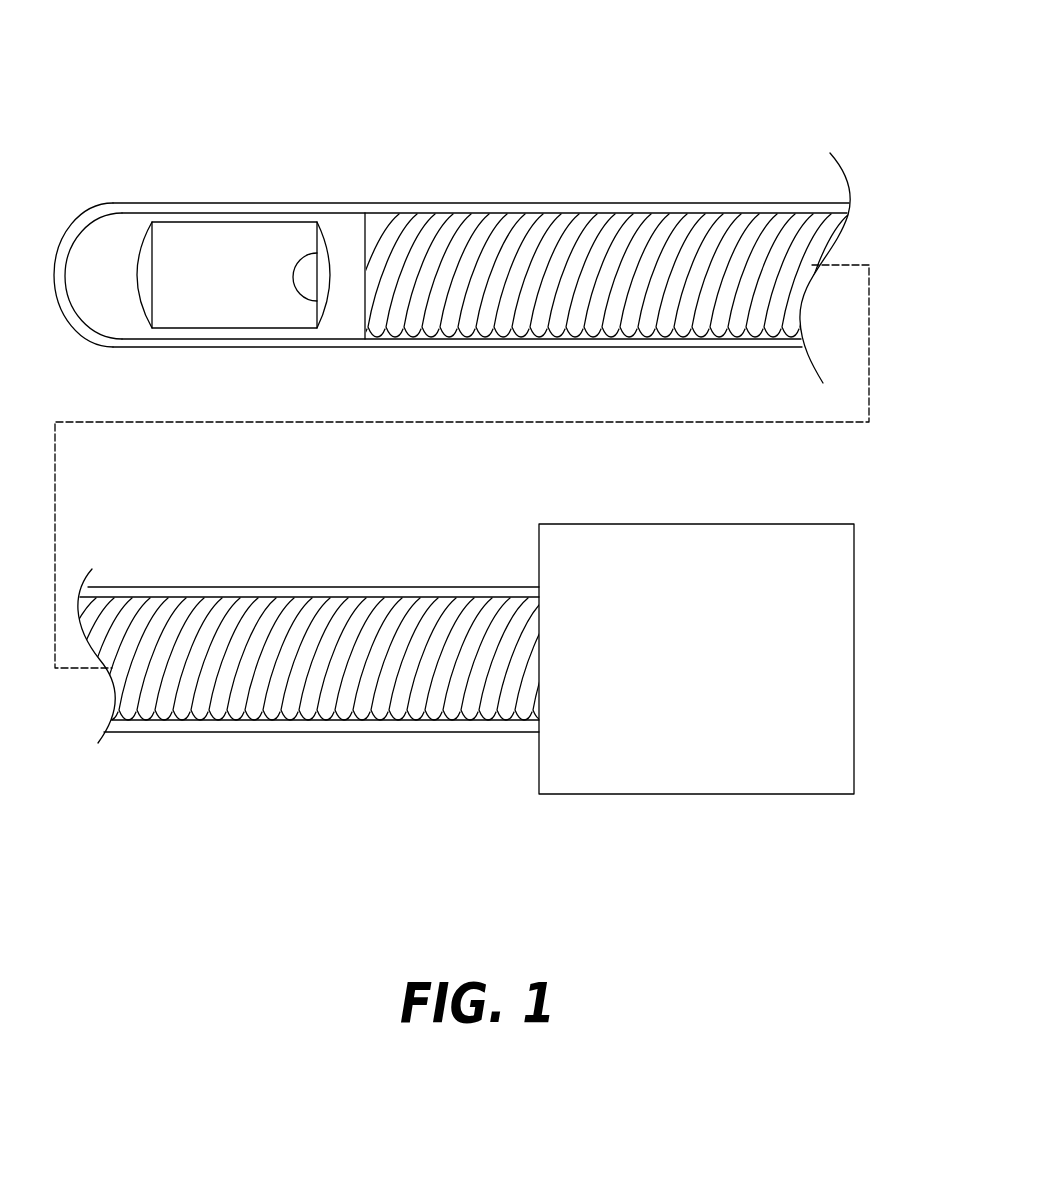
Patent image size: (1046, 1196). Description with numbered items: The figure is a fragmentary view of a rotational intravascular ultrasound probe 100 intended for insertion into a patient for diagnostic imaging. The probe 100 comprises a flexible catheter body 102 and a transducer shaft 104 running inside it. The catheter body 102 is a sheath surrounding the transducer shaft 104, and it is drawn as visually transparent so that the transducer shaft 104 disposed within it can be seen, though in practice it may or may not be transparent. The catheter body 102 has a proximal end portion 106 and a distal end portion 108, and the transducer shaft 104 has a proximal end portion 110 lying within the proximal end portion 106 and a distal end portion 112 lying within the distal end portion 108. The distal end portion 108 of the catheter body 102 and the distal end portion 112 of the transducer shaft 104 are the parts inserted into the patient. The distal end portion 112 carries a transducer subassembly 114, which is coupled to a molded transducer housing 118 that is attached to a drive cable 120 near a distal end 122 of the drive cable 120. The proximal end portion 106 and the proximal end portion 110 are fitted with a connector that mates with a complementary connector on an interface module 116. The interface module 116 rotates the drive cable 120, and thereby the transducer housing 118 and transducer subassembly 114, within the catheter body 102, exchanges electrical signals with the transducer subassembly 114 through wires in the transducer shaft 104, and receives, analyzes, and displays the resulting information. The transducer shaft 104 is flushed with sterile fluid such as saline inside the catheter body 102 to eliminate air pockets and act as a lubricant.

The rotational intravascular ultrasound (IVUS) probe 100 is at (612, 131).
The catheter body 102 is at (755, 205).
The transducer shaft 104 is at (435, 213).
The proximal end portion of the catheter body 106 is at (493, 733).
The distal end portion of the catheter body 108 is at (115, 205).
The proximal end portion of the transducer shaft 110 is at (452, 733).
The distal end portion of the transducer shaft 112 is at (147, 212).
The transducer subassembly 114 is at (243, 232).
The interface module 116 is at (710, 681).
The transducer housing 118 is at (125, 325).
The drive cable 120 is at (668, 205).
The distal end of the drive cable 122 is at (380, 215).